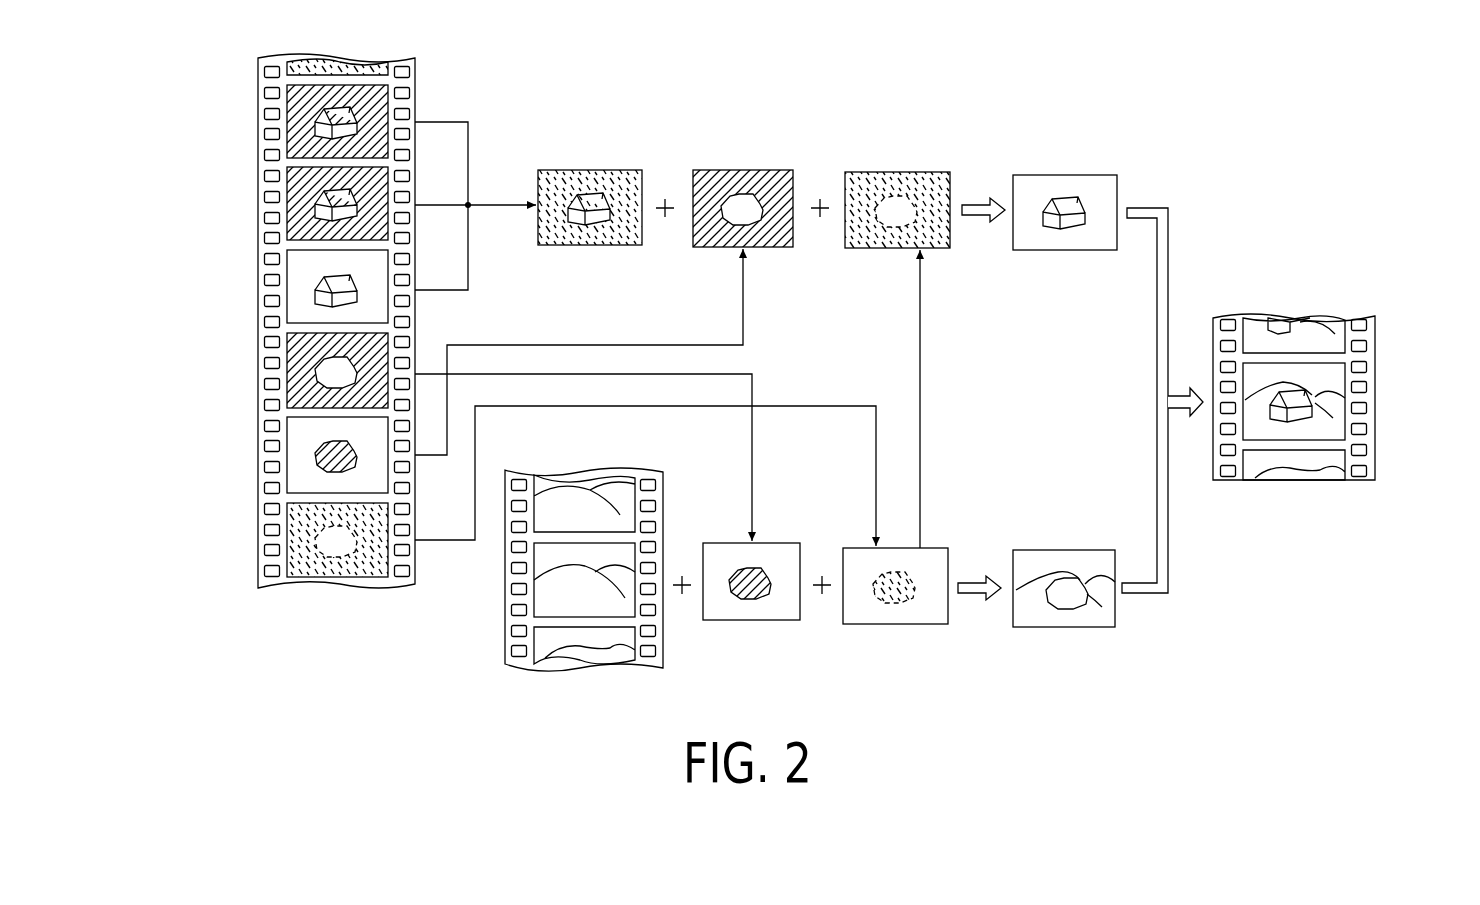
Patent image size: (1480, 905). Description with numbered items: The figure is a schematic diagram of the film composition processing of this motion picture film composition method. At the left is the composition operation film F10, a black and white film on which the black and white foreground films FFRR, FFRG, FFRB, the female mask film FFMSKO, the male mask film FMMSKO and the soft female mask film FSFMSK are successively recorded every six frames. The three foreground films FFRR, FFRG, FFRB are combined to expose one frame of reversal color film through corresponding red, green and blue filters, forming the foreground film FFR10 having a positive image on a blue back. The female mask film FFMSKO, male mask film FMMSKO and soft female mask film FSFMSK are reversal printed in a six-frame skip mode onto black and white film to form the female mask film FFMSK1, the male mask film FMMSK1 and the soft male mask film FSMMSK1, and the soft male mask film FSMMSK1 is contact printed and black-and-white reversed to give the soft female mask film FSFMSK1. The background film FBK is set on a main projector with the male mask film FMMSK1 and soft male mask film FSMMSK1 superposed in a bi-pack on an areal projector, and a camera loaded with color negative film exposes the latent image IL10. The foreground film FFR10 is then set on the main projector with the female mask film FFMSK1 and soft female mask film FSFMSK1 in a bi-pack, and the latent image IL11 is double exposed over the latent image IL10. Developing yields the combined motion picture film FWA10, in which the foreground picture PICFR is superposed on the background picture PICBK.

The composition operation film F10 is at (417, 80).
The black and white foreground film (red) FFRR is at (410, 112).
The black and white foreground film (green) FFRG is at (285, 204).
The black and white foreground film (blue) FFRB is at (285, 290).
The female mask film FFMSKO is at (285, 372).
The male mask film FMMSKO is at (285, 455).
The soft female mask film FSFMSK is at (285, 538).
The foreground film FFR10 is at (583, 170).
The female mask film FFMSK1 is at (746, 170).
The soft female mask film FSFMSK1 is at (940, 250).
The latent image IL11 is at (1118, 188).
The background film FBK is at (505, 612).
The male mask film FMMSK1 is at (752, 620).
The soft male mask film FSMMSK1 is at (895, 624).
The latent image IL10 is at (1117, 617).
The combined motion picture film FWA10 is at (1325, 438).
The background picture PICBK is at (1338, 376).
The foreground picture PICFR is at (1310, 404).